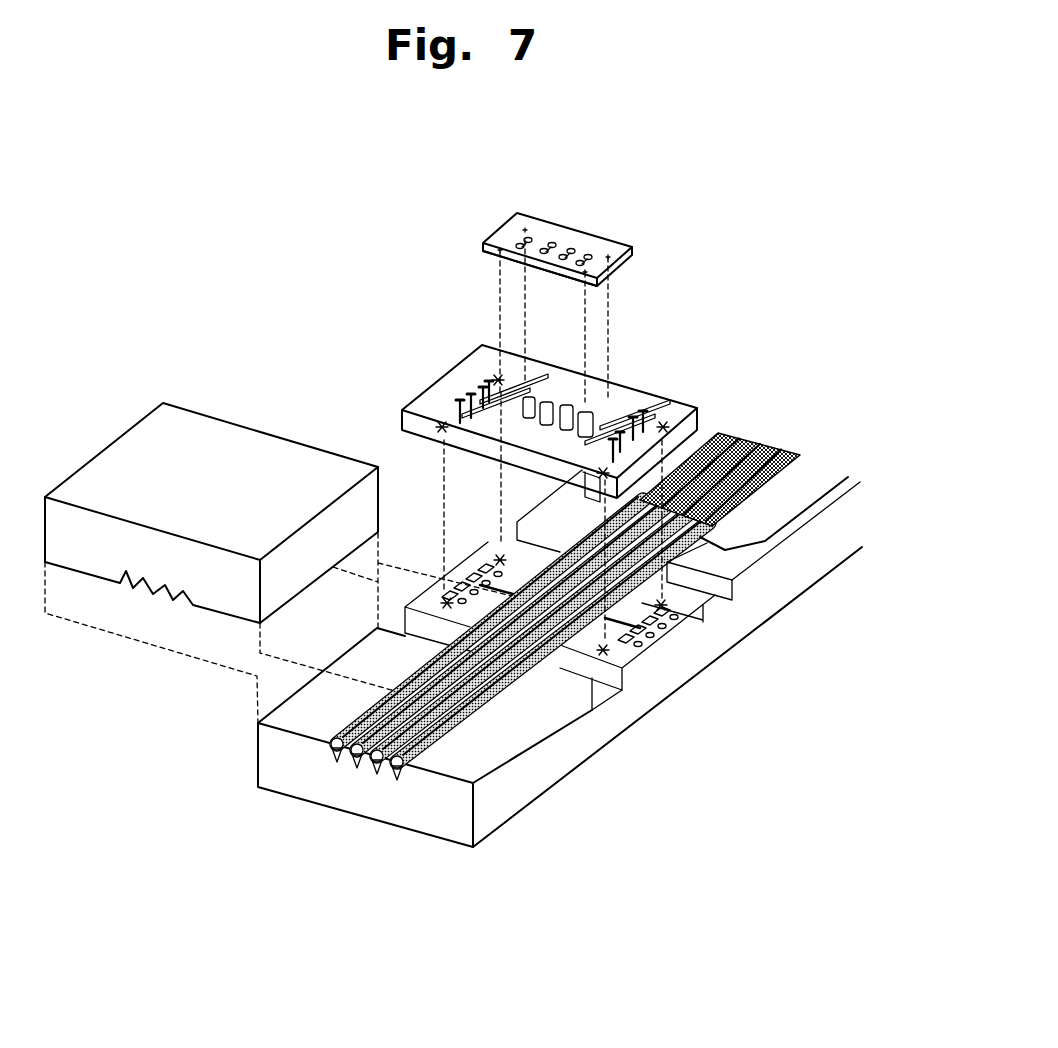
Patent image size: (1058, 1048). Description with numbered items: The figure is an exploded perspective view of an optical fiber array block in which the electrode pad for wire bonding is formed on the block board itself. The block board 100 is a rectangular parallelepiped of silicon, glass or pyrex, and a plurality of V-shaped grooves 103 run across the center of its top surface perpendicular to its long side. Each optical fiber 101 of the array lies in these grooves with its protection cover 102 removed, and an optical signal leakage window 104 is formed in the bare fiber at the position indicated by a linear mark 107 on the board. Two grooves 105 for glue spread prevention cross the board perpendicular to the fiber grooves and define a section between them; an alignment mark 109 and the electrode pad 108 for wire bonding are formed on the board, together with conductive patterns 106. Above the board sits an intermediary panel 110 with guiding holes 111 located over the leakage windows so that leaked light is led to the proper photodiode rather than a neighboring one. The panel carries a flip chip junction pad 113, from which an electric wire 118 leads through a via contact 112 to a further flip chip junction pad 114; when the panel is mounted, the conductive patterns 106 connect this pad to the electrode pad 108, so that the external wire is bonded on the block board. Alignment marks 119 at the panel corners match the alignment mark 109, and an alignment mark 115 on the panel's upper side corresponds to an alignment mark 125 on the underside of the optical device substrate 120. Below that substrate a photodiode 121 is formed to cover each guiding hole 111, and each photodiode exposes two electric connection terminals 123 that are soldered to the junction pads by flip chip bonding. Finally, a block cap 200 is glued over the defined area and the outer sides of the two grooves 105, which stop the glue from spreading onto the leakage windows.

The block board 100 is at (550, 768).
The optical fiber 101 is at (352, 765).
The protection cover 102 is at (728, 440).
The V-shaped grooves 103 is at (391, 782).
The optical signal leakage window 104 is at (527, 588).
The grooves for glue spread prevention 105 is at (614, 701).
The conductive patterns 106 is at (697, 600).
The linear mark 107 is at (657, 620).
The electrode pad 108 is at (680, 618).
The alignment mark 109 is at (638, 652).
The intermediary panel 110 is at (394, 424).
The guiding holes 111 is at (548, 392).
The via contact 112 is at (467, 403).
The flip chip junction pad 113 is at (597, 400).
The flip chip junction pad 114 is at (455, 418).
The alignment mark 115 is at (607, 412).
The electric wire 118 is at (645, 412).
The alignment marks 119 is at (441, 441).
The optical device substrate 120 is at (476, 240).
The photodiode 121 is at (523, 232).
The electric connection terminal 123 is at (572, 248).
The alignment mark 125 is at (498, 253).
The block cap 200 is at (205, 430).